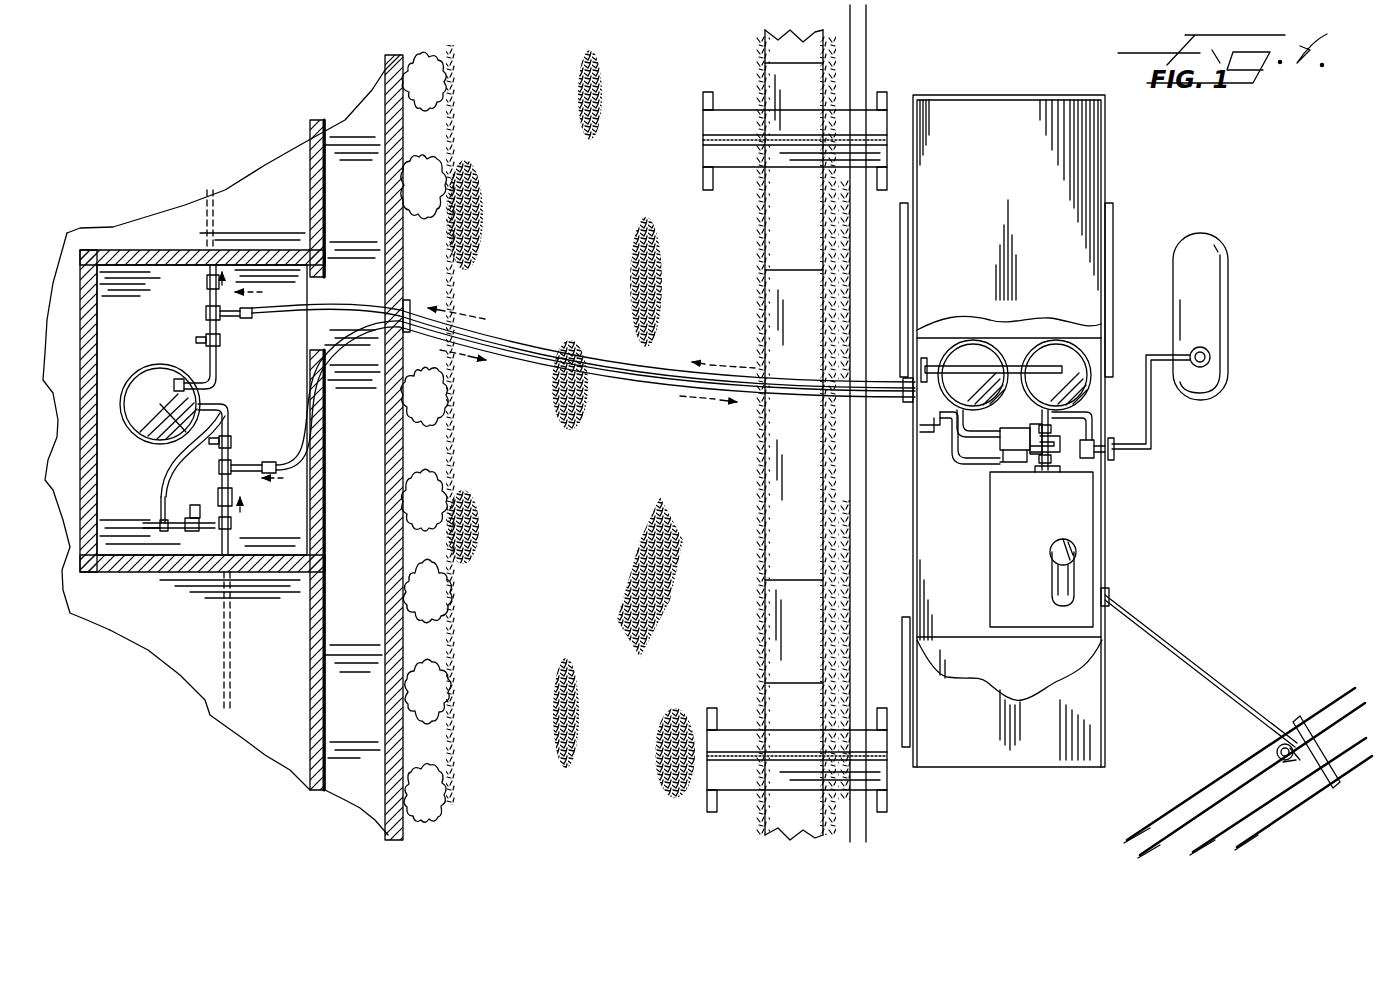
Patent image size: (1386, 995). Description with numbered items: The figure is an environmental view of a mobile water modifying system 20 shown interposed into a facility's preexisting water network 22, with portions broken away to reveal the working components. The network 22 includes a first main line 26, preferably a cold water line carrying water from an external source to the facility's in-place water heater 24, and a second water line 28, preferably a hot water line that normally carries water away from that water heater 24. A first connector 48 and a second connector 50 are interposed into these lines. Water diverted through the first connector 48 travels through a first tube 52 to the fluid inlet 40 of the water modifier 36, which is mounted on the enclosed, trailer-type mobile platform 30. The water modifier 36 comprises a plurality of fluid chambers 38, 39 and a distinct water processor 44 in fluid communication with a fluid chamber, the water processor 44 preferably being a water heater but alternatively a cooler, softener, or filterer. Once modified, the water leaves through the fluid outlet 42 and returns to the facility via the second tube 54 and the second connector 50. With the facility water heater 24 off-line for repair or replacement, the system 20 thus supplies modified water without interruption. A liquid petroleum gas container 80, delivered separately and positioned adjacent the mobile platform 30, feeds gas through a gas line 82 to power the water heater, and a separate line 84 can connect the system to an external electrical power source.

The mobile water modifying system 20 is at (1090, 431).
The water network 22 is at (162, 470).
The water heater 24 is at (157, 375).
The first main line 26 is at (229, 553).
The second water line 28 is at (217, 373).
The mobile platform 30 is at (1108, 717).
The water modifier 36 is at (968, 478).
The fluid chamber 38 is at (1053, 355).
The fluid chamber 39 is at (971, 355).
The fluid inlet 40 is at (1040, 408).
The fluid outlet 42 is at (958, 362).
The water processor 44 is at (1058, 518).
The first connector 48 is at (230, 465).
The second connector 50 is at (207, 312).
The first tube 52 is at (645, 402).
The second tube 54 is at (600, 364).
The liquid petroleum gas container 80 is at (1205, 273).
The gas line 82 is at (1148, 428).
The separate line 84 is at (1208, 677).